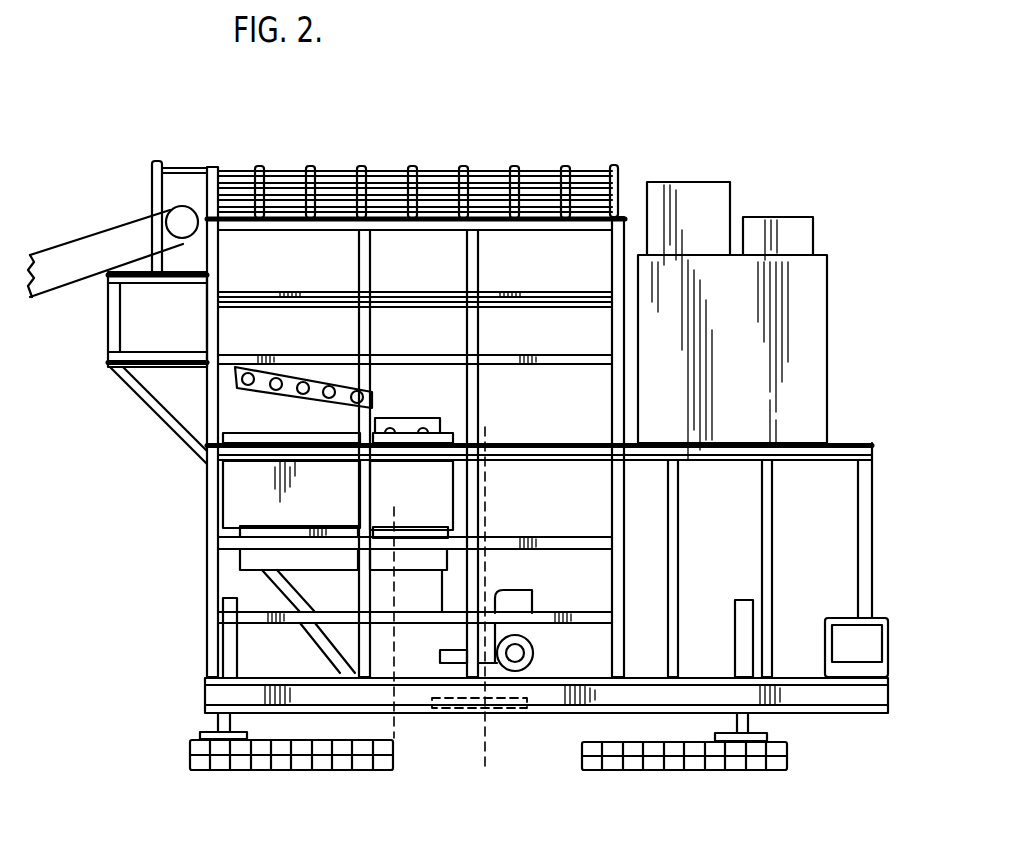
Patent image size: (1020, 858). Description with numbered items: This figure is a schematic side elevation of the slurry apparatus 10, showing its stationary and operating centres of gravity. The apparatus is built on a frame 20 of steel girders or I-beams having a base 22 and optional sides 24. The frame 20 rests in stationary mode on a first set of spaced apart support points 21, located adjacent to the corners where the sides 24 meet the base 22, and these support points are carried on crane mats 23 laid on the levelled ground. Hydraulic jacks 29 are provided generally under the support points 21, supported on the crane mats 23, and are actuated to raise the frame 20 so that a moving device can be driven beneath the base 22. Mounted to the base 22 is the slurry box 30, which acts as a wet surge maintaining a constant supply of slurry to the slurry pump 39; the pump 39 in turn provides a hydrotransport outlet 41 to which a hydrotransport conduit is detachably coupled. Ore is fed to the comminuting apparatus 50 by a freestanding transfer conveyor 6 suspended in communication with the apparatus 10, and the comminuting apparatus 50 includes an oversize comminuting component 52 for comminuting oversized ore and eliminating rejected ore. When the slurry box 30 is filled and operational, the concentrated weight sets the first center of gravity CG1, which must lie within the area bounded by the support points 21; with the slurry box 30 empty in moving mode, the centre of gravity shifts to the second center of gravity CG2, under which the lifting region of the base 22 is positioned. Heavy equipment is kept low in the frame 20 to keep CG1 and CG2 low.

The transfer conveyor 6 is at (122, 227).
The slurry apparatus 10 is at (685, 172).
The frame 20 is at (205, 383).
The first set of spaced apart support points 21 is at (212, 692).
The base 22 is at (710, 697).
The crane mats 23 is at (280, 765).
The sides 24 is at (253, 613).
The hydraulic jacks 29 is at (227, 642).
The slurry box 30 is at (233, 497).
The slurry pump 39 is at (522, 598).
The hydrotransport outlet 41 is at (533, 652).
The comminuting apparatus 50 is at (278, 397).
The oversize comminuting component 52 is at (413, 418).
The first center of gravity CG1 is at (417, 614).
The second center of gravity CG2 is at (507, 590).